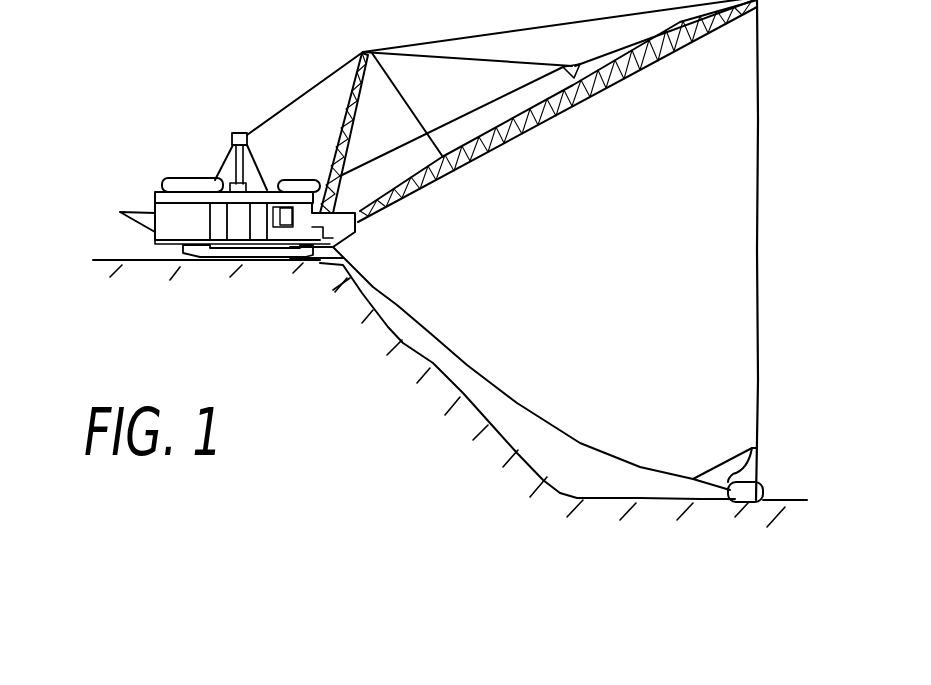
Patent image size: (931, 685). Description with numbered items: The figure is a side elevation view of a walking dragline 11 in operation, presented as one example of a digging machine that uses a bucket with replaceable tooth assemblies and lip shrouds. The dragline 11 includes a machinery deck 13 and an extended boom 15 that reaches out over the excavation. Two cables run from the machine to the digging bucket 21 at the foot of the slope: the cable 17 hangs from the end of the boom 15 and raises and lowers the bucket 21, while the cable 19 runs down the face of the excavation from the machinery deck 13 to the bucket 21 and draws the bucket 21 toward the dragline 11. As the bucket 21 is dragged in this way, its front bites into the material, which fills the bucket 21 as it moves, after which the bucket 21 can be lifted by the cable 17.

The walking dragline 11 is at (192, 180).
The machinery deck 13 is at (188, 223).
The extended boom 15 is at (508, 140).
The cable 17 is at (758, 252).
The cable 19 is at (467, 367).
The digging bucket 21 is at (752, 500).